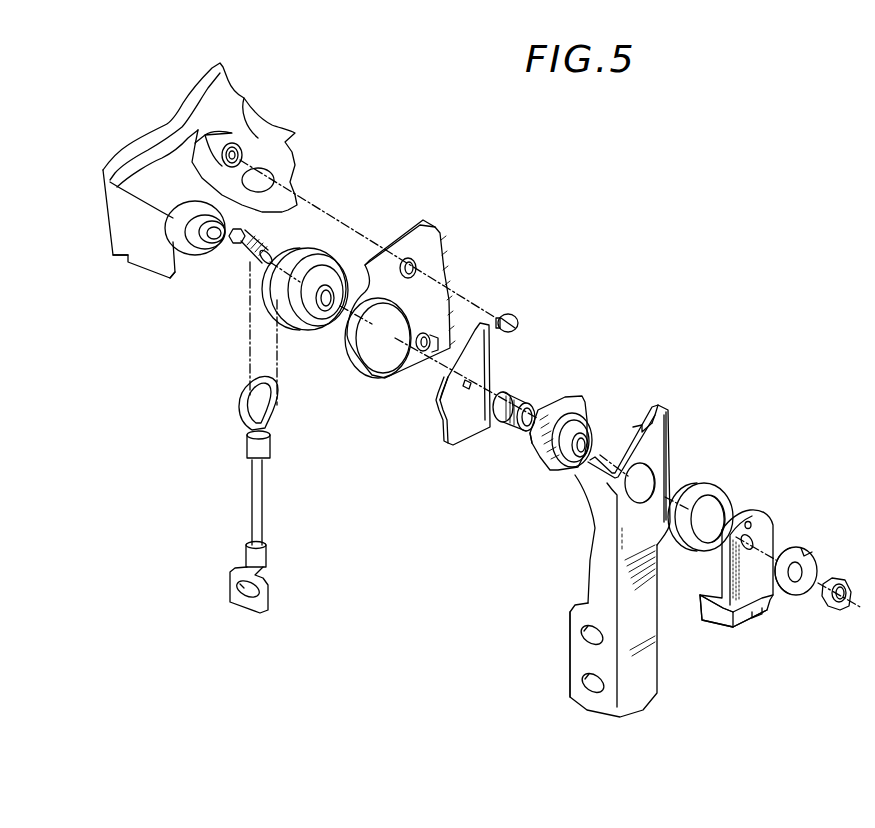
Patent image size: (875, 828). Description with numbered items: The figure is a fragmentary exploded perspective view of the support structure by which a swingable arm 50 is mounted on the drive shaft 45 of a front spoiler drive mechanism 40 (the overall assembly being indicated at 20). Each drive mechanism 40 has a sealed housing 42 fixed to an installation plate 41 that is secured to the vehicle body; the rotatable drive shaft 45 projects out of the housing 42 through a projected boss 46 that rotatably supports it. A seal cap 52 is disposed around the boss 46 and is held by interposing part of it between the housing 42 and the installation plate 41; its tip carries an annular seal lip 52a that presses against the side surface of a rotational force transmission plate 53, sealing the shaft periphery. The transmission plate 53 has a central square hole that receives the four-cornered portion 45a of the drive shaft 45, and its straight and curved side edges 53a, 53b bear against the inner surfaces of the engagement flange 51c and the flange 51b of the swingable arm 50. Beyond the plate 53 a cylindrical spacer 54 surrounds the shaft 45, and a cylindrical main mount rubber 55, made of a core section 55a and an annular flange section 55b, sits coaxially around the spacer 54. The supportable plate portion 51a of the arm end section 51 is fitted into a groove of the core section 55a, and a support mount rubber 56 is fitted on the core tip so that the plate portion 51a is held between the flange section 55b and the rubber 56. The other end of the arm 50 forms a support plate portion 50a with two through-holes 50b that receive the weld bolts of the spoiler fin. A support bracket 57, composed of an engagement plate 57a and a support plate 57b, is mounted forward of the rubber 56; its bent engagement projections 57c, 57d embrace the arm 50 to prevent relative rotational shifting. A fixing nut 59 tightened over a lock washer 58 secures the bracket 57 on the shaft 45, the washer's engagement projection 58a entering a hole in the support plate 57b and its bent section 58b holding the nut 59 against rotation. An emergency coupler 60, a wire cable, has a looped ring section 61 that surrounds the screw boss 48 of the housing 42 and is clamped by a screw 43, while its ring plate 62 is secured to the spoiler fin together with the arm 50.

The brake assembly 20 is at (334, 168).
The front spoiler drive mechanism 40 is at (270, 98).
The installation plate 41 is at (449, 227).
The sealed housing 42 is at (150, 256).
The screw 43 is at (512, 312).
The drive shaft 45 is at (236, 262).
The four-cornered portion 45a is at (209, 265).
The projected boss 46 is at (180, 263).
The screw boss 48 is at (248, 232).
The swingable arm 50 is at (586, 571).
The support plate portion 50a is at (580, 655).
The through-holes 50b is at (583, 634).
The end section 51 is at (600, 520).
The supportable plate portion 51a is at (660, 448).
The flange 51b is at (587, 485).
The engagement flange 51c is at (652, 412).
The seal cap 52 is at (338, 252).
The annular seal lip 52a is at (330, 304).
The rotational force transmission plate 53 is at (443, 425).
The straight side edge 53a is at (484, 362).
The curved side edge 53b is at (440, 393).
The cylindrical spacer 54 is at (498, 416).
The main mount rubber 55 is at (574, 393).
The core section 55a is at (584, 425).
The flange section 55b is at (537, 447).
The support mount rubber 56 is at (718, 495).
The support bracket 57 is at (782, 508).
The engagement plate 57a is at (742, 625).
The support plate 57b is at (764, 517).
The engagement projection 57c is at (712, 613).
The engagement projection 57d is at (757, 620).
The lock washer 58 is at (794, 603).
The engagement projection 58a is at (797, 546).
The bent section 58b is at (798, 588).
The fixing nut 59 is at (837, 575).
The emergency coupler 60 is at (267, 490).
The ring section 61 is at (275, 393).
The ring plate 62 is at (265, 600).